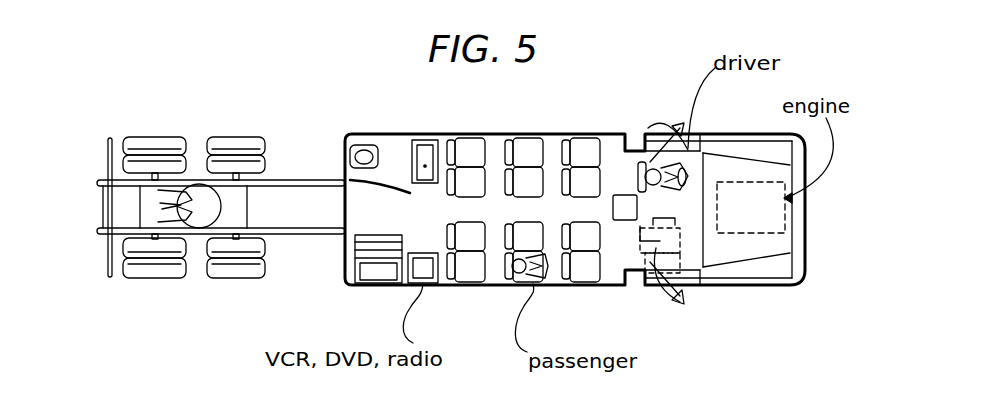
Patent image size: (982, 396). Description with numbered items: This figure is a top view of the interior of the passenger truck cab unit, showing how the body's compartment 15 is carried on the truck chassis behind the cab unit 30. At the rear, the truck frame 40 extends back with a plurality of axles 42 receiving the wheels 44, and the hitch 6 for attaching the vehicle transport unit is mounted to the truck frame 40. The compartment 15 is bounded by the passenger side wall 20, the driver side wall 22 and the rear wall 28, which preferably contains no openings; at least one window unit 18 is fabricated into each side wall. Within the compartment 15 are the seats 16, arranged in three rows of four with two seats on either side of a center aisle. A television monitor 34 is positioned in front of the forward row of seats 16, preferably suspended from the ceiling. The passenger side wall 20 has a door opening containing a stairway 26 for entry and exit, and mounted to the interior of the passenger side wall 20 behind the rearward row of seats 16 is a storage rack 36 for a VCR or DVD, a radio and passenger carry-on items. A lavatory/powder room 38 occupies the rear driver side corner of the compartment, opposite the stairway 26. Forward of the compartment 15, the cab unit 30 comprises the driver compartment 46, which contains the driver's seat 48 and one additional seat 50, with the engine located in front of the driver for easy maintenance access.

The hitch 6 is at (142, 200).
The compartment 15 is at (566, 222).
The seats 16 is at (540, 138).
The window unit 18 is at (472, 138).
The passenger side wall 20 is at (496, 286).
The driver side wall 22 is at (387, 134).
The stairway 26 is at (400, 285).
The rear wall 28 is at (344, 206).
The cab unit 30 is at (703, 152).
The television monitor 34 is at (613, 194).
The storage rack 36 is at (423, 252).
The lavatory/powder room 38 is at (362, 143).
The truck frame 40 is at (306, 178).
The axles 42 is at (256, 237).
The wheels 44 is at (228, 279).
The driver compartment 46 is at (693, 195).
The driver's seat 48 is at (658, 150).
The additional seat 50 is at (657, 286).